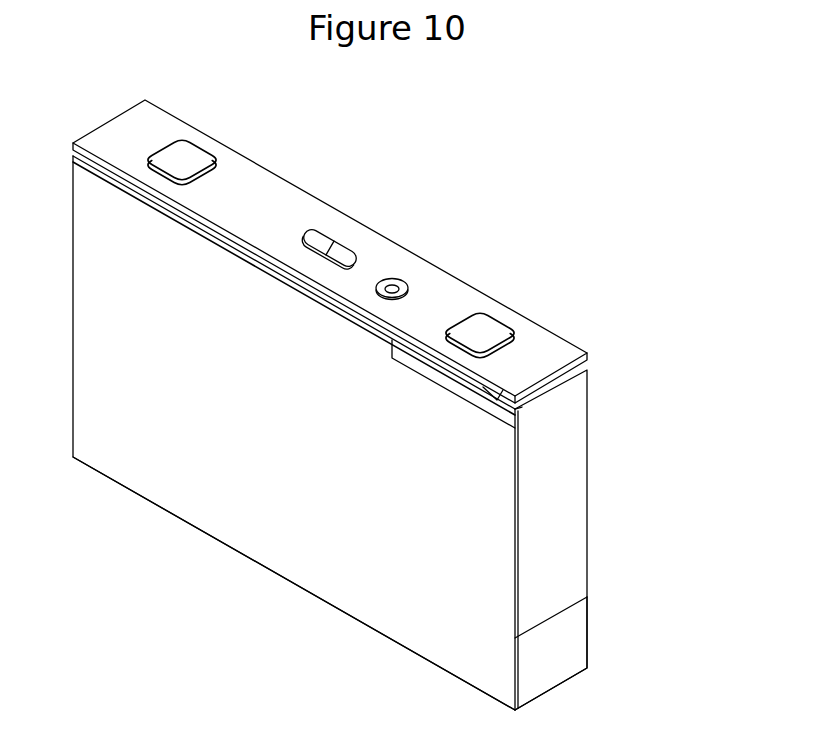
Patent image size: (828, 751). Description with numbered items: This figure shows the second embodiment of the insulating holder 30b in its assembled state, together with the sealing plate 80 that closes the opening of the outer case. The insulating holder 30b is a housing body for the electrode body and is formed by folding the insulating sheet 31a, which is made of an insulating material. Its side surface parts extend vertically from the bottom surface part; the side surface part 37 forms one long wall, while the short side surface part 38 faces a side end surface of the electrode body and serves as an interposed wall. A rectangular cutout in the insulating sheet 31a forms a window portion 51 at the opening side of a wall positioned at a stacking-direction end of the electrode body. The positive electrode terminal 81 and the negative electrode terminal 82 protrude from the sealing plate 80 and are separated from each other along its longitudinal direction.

The sealing plate 80 is at (257, 189).
The positive electrode terminal 81 is at (489, 322).
The negative electrode terminal 82 is at (200, 156).
The window portion 51 is at (428, 378).
The insulating sheet 31a is at (573, 437).
The side surface part 38 is at (567, 535).
The side surface part 37 is at (337, 520).
The insulating holder 30b is at (243, 458).